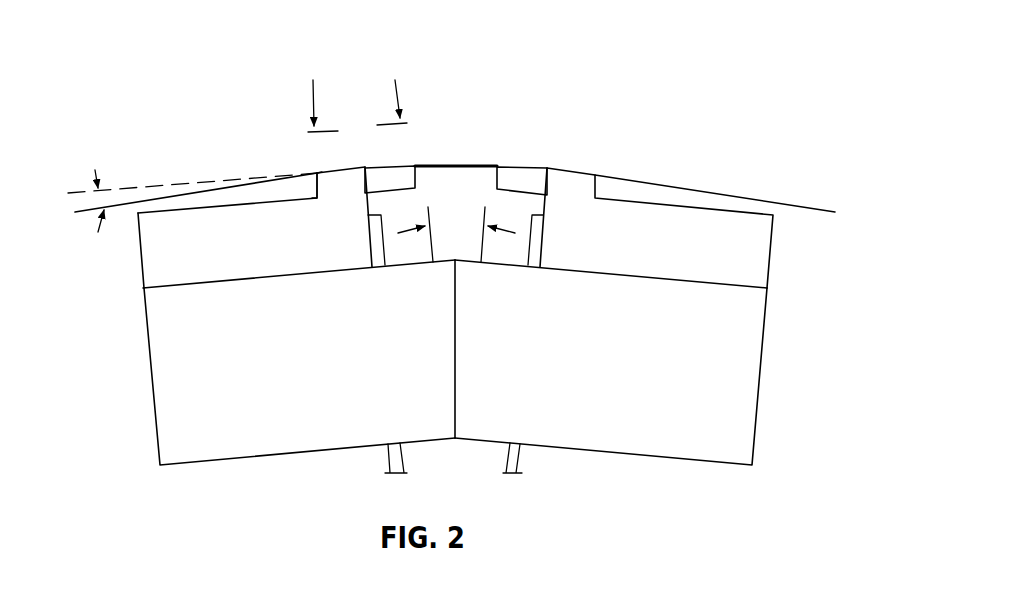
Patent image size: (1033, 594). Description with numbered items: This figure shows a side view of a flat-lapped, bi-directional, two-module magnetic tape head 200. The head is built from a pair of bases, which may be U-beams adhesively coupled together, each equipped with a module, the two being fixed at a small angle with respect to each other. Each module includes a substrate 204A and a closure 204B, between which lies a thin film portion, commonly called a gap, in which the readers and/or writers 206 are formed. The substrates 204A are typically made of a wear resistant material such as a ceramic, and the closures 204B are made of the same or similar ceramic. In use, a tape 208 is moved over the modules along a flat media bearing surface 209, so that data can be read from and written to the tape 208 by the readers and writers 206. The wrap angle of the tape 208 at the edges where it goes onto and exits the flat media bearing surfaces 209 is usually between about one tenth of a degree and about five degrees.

The magnetic tape head 200 is at (190, 132).
The substrate 204A is at (197, 233).
The closure 204B is at (497, 178).
The readers and/or writers 206 is at (367, 162).
The tape 208 is at (690, 187).
The media bearing surface 209 is at (319, 163).